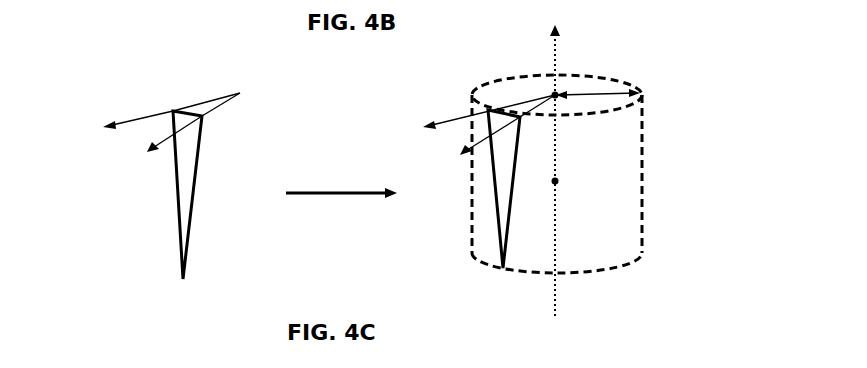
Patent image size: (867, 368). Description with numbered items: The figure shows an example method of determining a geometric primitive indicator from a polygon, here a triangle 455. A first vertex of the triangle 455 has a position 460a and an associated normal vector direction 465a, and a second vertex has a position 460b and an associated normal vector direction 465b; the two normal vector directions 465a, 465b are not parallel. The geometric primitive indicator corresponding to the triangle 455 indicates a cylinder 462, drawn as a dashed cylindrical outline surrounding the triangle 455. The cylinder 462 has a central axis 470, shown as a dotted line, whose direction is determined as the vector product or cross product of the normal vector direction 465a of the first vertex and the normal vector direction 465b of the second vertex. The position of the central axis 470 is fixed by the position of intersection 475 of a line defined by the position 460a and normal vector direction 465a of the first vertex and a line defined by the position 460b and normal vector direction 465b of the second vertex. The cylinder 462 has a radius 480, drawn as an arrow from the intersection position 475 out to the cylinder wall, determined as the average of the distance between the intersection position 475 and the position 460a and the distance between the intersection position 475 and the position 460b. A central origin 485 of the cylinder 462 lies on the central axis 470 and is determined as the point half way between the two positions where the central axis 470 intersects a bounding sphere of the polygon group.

The triangle 455 is at (185, 195).
The position of first vertex 460a is at (173, 110).
The position of second vertex 460b is at (202, 116).
The normal vector direction of first vertex 465a is at (309, 118).
The normal vector direction of second vertex 465b is at (333, 134).
The cylinder 462 is at (627, 238).
The central axis 470 is at (554, 162).
The position of intersection 475 is at (556, 95).
The radius 480 is at (603, 95).
The central origin 485 is at (558, 180).